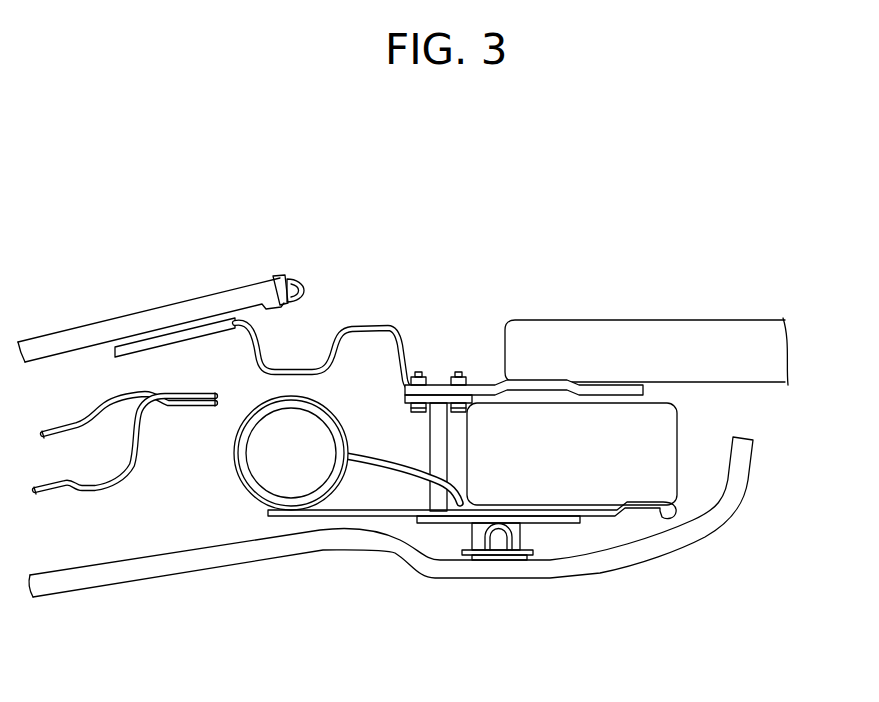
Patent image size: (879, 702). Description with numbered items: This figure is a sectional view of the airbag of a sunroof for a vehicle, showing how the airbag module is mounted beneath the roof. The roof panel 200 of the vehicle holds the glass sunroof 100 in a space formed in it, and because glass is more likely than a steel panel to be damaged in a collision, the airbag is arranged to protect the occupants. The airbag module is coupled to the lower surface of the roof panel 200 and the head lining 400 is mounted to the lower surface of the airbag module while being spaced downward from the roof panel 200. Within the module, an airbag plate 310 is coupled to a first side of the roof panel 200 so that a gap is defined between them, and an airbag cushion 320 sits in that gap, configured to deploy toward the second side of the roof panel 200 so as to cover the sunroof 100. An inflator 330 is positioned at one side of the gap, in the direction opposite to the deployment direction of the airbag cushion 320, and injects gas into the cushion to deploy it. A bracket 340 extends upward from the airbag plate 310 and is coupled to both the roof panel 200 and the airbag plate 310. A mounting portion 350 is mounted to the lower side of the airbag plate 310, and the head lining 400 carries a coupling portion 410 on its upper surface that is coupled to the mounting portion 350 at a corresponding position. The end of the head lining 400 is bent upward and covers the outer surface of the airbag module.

The sunroof 100 is at (645, 330).
The roof panel 200 is at (155, 315).
The airbag plate 310 is at (342, 516).
The airbag cushion 320 is at (652, 465).
The inflator 330 is at (272, 473).
The bracket 340 is at (437, 423).
The mounting portion 350 is at (443, 523).
The head lining 400 is at (672, 542).
The coupling portion 410 is at (523, 535).